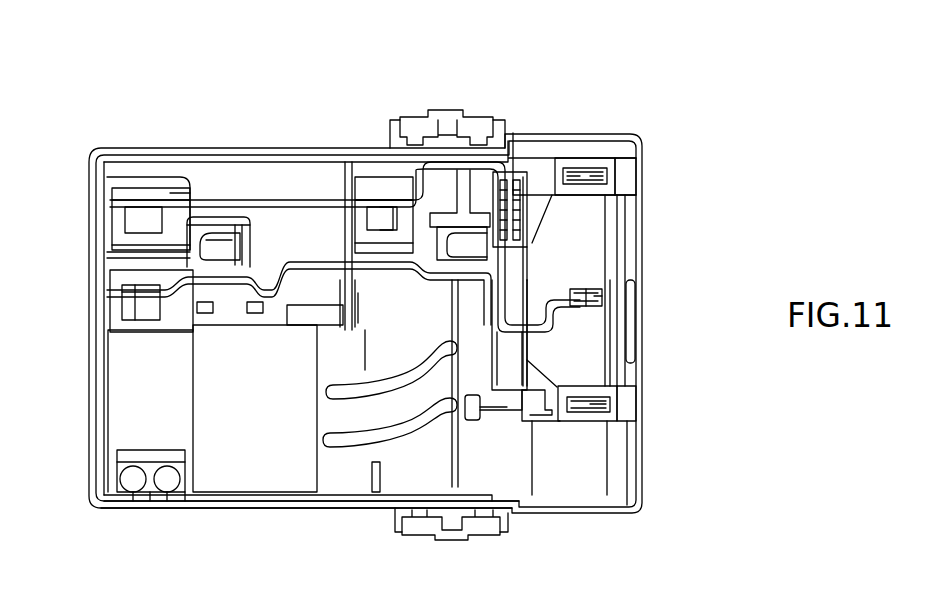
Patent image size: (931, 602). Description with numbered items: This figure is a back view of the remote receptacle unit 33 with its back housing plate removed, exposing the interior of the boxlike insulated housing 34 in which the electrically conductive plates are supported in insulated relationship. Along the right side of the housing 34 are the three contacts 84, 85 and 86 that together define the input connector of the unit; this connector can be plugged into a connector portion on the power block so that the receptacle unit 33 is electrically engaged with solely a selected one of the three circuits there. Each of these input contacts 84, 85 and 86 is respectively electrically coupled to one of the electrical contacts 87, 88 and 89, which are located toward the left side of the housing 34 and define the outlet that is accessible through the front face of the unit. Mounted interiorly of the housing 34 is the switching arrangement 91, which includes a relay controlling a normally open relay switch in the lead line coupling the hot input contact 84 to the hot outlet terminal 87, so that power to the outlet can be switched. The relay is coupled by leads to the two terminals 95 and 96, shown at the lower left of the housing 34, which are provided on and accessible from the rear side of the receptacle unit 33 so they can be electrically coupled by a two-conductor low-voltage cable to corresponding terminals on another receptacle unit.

The remote receptacle unit 33 is at (375, 116).
The housing 34 is at (327, 500).
The hot input contact 84 is at (583, 172).
The contact 85 is at (594, 407).
The contact 86 is at (605, 305).
The hot outlet terminal 87 is at (128, 218).
The electrical contact 88 is at (127, 297).
The electrical contact 89 is at (221, 245).
The switching arrangement 91 is at (270, 460).
The terminal 95 is at (135, 492).
The terminal 96 is at (171, 490).